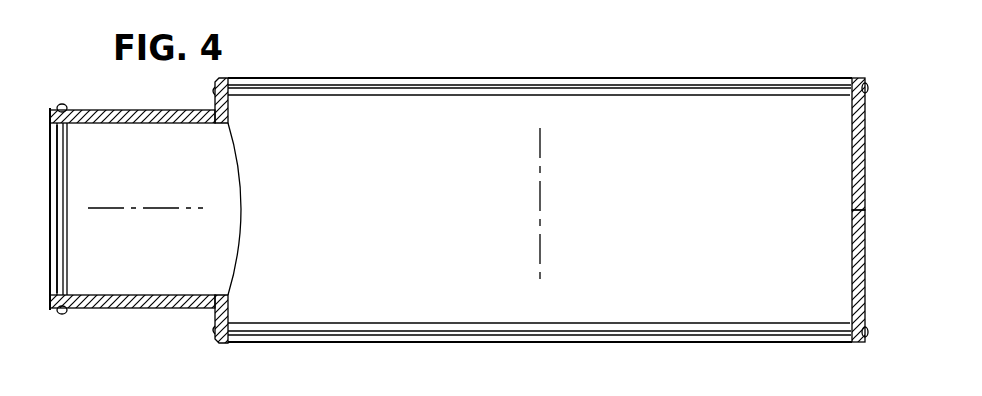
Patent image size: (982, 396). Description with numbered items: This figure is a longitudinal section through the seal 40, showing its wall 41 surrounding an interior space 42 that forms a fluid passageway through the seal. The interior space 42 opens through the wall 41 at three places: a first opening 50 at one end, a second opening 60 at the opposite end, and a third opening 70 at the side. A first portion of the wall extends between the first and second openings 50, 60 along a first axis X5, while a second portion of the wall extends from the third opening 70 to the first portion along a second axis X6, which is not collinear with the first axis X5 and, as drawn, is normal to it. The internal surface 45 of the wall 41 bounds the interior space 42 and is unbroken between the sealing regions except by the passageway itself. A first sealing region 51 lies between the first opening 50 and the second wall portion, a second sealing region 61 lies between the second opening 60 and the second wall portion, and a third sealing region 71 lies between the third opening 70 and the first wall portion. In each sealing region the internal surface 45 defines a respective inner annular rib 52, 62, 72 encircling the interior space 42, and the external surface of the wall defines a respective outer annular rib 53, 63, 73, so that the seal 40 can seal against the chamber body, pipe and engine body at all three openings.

The seal 40 is at (682, 60).
The wall 41 is at (666, 237).
The interior space 42 is at (471, 245).
The internal surface 45 is at (143, 155).
The first opening 50 is at (524, 78).
The first sealing region 51 is at (208, 90).
The first inner annular rib 52 is at (327, 96).
The first outer annular rib 53 is at (866, 92).
The second opening 60 is at (492, 343).
The second sealing region 61 is at (208, 333).
The second inner annular rib 62 is at (318, 311).
The second outer annular rib 63 is at (866, 330).
The third opening 70 is at (54, 204).
The third sealing region 71 is at (64, 98).
The third inner annular rib 72 is at (70, 272).
The third outer annular rib 73 is at (61, 312).
The first axis X5 is at (541, 192).
The second axis X6 is at (170, 210).